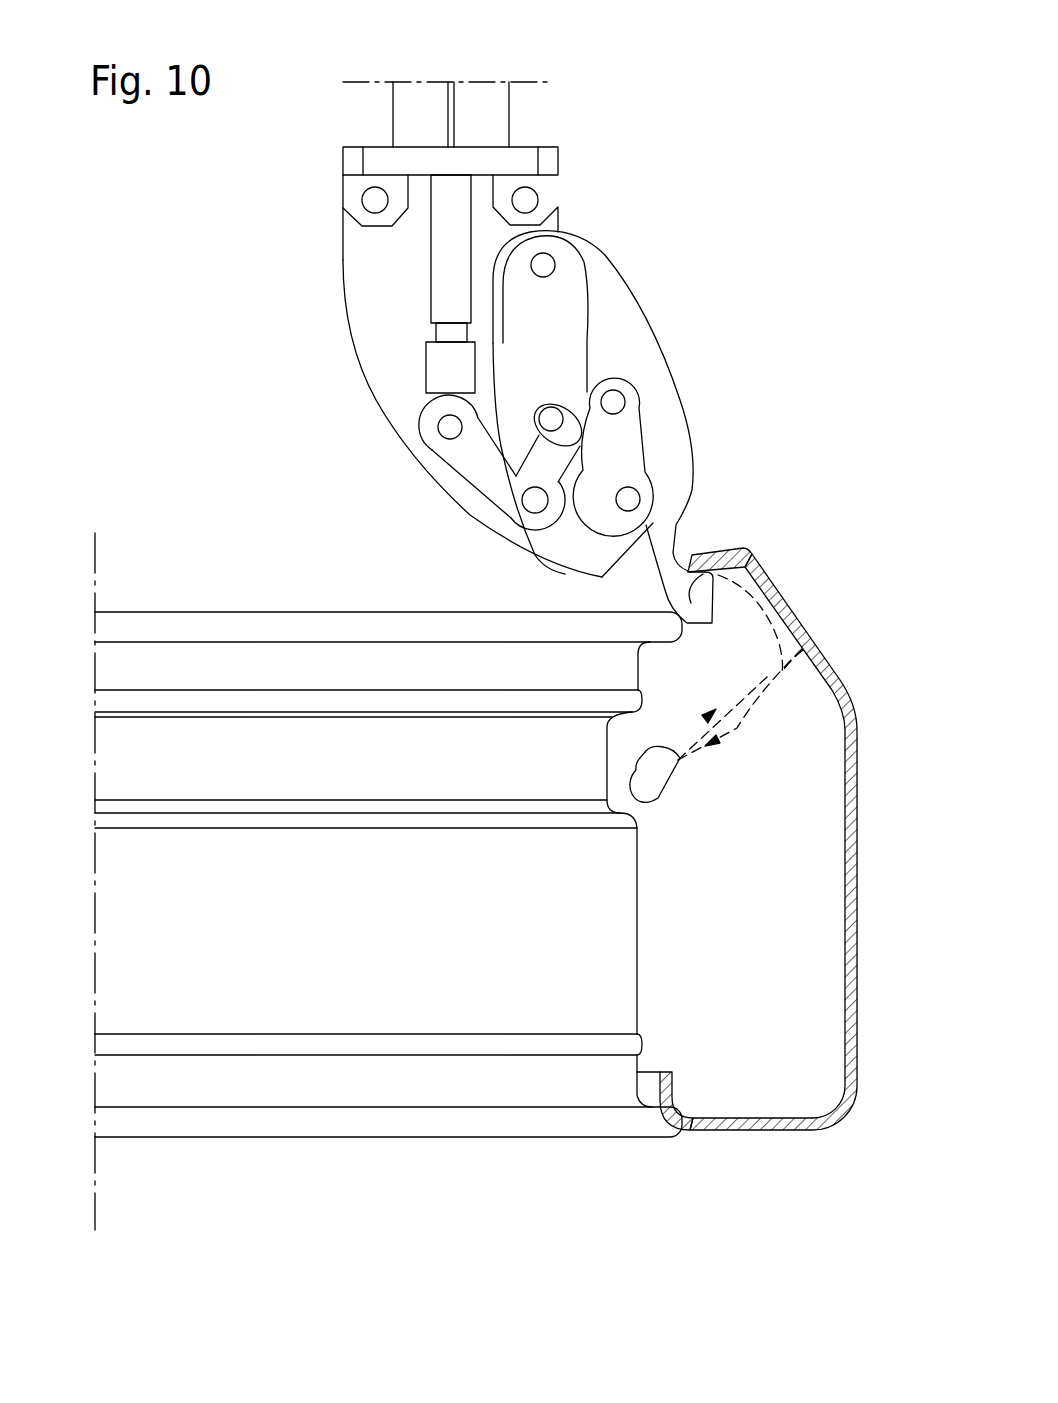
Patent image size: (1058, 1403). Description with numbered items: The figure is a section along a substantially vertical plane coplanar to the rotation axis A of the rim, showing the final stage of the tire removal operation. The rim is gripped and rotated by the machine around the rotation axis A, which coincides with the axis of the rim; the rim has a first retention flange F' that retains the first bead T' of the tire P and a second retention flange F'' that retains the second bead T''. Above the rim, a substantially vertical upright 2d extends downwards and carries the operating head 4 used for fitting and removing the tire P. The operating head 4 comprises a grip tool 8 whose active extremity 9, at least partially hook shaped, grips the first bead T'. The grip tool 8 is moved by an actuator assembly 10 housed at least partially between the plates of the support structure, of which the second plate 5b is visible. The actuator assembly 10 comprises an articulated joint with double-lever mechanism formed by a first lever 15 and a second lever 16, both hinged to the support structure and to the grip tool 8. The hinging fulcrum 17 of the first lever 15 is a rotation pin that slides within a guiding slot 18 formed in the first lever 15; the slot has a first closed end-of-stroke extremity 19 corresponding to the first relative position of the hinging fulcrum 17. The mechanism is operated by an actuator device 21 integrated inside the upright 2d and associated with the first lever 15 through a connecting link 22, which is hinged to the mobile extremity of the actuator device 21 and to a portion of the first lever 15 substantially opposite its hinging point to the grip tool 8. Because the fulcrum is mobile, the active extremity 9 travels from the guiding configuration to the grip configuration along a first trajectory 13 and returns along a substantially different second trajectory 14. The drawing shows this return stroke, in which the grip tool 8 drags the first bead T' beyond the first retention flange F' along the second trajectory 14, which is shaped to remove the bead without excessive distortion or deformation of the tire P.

The upright 2d is at (488, 108).
The operating head 4 is at (322, 153).
The actuator device 21 is at (440, 258).
The actuator assembly 10 is at (413, 300).
The second plate 5b is at (385, 338).
The grip tool 8 is at (640, 362).
The first lever 15 is at (558, 302).
The second lever 16 is at (625, 452).
The hinging fulcrum 17 is at (553, 412).
The guiding slot 18 is at (557, 442).
The first closed end-of-stroke extremity 19 is at (530, 498).
The connecting link 22 is at (436, 443).
The active extremity 9 is at (707, 552).
The rotation axis A is at (95, 572).
The first retention flange F' is at (388, 601).
The second retention flange F'' is at (388, 1178).
The first bead T' is at (768, 544).
The second bead T'' is at (725, 1144).
The tire P is at (853, 872).
The first trajectory 13 is at (737, 730).
The second trajectory 14 is at (782, 672).